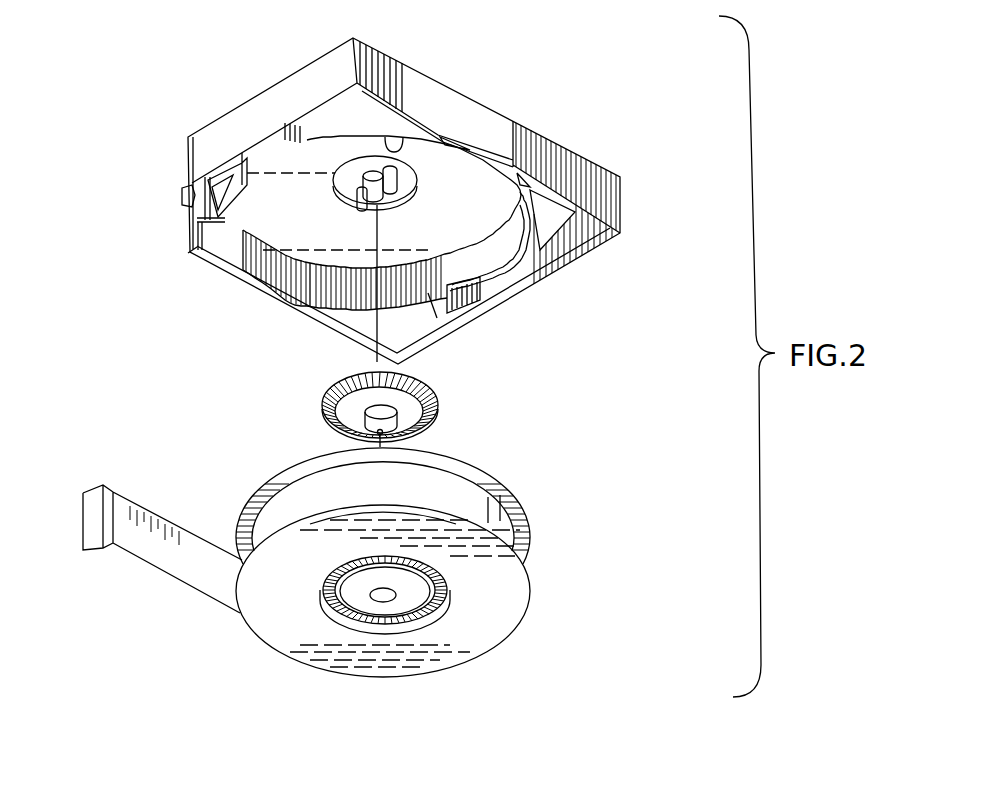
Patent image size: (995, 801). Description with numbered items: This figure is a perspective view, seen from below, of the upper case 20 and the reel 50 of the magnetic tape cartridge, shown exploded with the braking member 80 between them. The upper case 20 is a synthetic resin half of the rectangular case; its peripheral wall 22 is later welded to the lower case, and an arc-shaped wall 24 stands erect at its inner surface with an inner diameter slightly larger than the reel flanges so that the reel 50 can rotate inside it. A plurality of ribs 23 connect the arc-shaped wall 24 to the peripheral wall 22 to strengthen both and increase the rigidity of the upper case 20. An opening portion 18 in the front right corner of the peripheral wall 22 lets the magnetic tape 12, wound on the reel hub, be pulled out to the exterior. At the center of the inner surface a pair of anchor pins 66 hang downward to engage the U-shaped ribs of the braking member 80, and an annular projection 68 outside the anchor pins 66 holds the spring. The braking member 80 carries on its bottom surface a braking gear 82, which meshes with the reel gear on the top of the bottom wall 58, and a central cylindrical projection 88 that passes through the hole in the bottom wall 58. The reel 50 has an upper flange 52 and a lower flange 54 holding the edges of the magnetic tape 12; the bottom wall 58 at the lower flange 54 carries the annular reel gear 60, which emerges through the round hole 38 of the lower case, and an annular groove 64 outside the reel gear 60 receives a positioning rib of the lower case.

The magnetic tape 12 is at (207, 580).
The opening portion 18 is at (187, 192).
The upper case 20 is at (604, 163).
The peripheral wall 22 is at (617, 203).
The ribs 23 is at (440, 137).
The arc-shaped wall 24 is at (395, 145).
The round hole 38 is at (433, 612).
The reel 50 is at (423, 577).
The upper flange 52 is at (503, 497).
The lower flange 54 is at (493, 630).
The bottom wall 58 is at (335, 600).
The reel gear 60 is at (445, 588).
The annular groove 64 is at (327, 587).
The anchor pins 66 is at (375, 198).
The annular projection 68 is at (398, 172).
The braking member 80 is at (395, 414).
The braking gear 82 is at (410, 435).
The cylindrical projection 88 is at (363, 422).